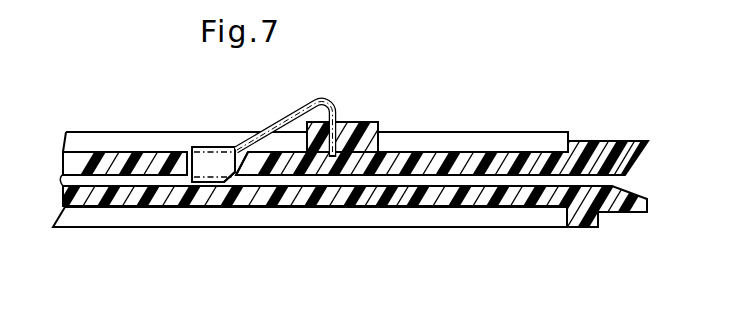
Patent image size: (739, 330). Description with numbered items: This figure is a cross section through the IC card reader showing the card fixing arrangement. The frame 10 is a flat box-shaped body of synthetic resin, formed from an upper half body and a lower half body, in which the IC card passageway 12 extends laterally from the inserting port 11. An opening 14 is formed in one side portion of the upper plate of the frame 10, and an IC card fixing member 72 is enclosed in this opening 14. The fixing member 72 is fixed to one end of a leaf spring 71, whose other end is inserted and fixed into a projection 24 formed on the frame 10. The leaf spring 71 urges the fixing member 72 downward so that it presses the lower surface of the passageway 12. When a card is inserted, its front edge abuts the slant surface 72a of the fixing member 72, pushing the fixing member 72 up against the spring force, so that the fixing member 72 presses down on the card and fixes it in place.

The frame 10 is at (530, 197).
The inserting port 11 is at (636, 161).
The IC card passageway 12 is at (443, 183).
The opening 14 is at (186, 162).
The projection 24 is at (364, 132).
The leaf spring 71 is at (277, 121).
The IC card fixing member 72 is at (216, 168).
The slant surface 72a is at (234, 183).